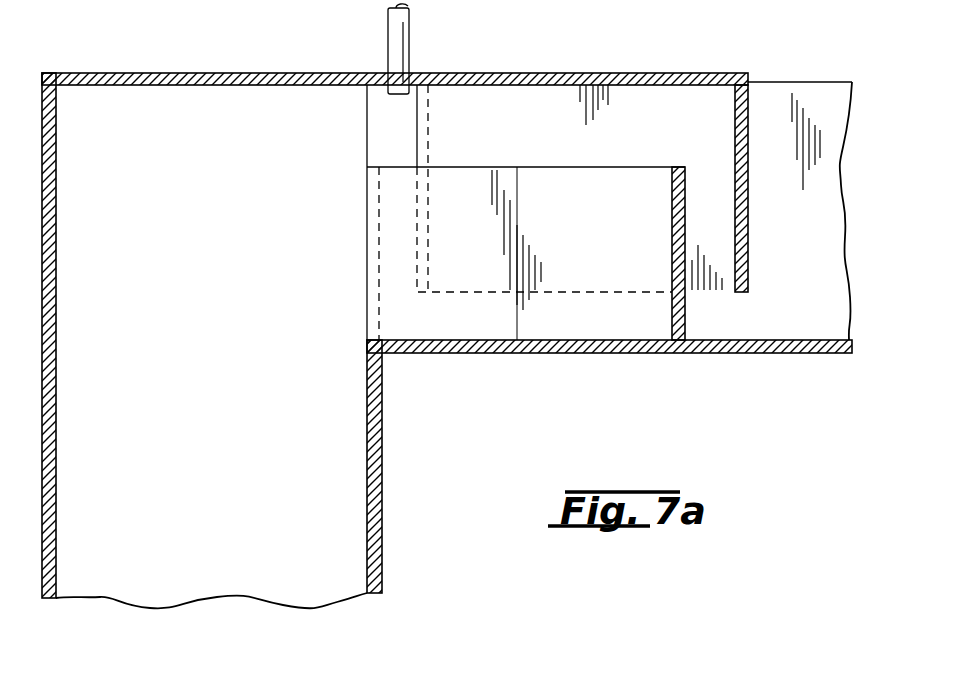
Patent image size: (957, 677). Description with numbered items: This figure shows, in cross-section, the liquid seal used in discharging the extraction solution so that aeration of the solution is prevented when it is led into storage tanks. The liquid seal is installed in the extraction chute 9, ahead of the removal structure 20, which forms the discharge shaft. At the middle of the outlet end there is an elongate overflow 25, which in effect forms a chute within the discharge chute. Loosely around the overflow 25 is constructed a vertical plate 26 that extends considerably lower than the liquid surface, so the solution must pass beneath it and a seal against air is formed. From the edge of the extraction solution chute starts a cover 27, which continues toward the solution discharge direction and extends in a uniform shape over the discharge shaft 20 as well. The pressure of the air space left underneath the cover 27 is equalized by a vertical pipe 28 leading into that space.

The extraction chute 9 is at (818, 105).
The removal structure 20 is at (352, 530).
The elongate overflow 25 is at (686, 318).
The vertical plate 26 is at (755, 108).
The cover 27 is at (548, 73).
The vertical pipe 28 is at (395, 39).